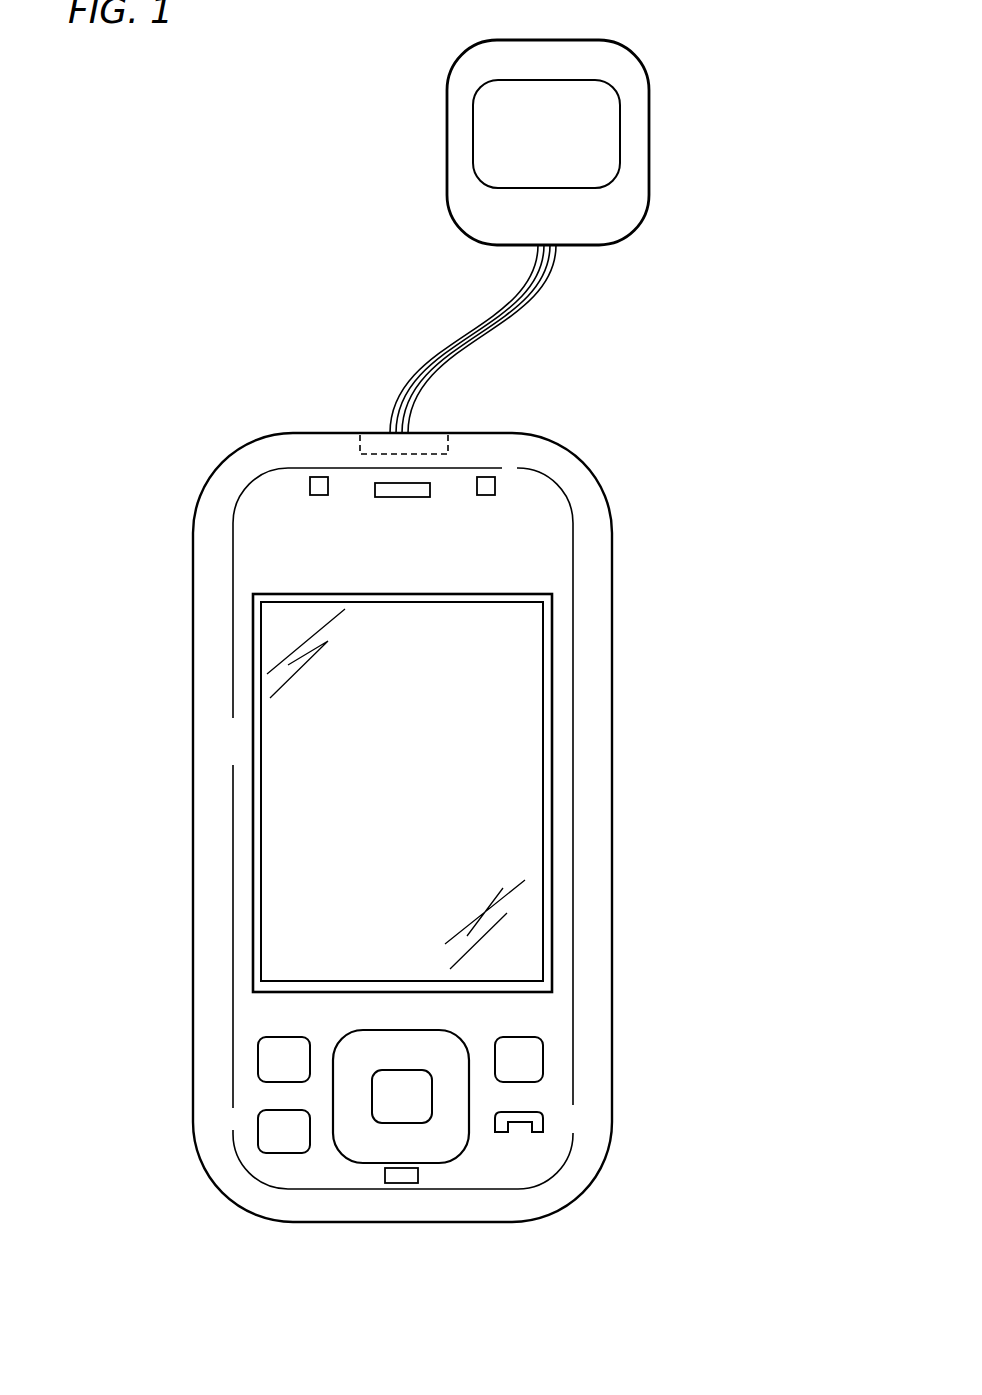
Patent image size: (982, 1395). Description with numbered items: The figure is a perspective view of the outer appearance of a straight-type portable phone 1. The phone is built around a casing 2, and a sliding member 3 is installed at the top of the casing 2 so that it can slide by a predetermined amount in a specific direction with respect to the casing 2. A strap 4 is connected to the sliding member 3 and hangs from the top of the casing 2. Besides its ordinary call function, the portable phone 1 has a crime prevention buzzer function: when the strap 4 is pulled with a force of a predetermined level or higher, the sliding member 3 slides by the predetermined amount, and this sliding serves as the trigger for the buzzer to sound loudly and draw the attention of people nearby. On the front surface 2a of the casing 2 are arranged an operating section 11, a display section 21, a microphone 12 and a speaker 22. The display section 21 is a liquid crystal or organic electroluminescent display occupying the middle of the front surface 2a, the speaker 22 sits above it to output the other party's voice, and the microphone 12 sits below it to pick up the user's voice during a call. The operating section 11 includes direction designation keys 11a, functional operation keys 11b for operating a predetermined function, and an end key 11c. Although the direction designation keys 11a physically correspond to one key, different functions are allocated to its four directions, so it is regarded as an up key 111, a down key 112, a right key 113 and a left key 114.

The portable phone 1 is at (182, 314).
The casing 2 is at (632, 563).
The front surface 2a is at (267, 492).
The sliding member 3 is at (373, 442).
The strap 4 is at (664, 182).
The operating section 11 is at (244, 1056).
The direction designation keys 11a is at (345, 1175).
The functional operation keys 11b is at (265, 1067).
The end key 11c is at (517, 1122).
The microphone 12 is at (412, 1183).
The display section 21 is at (512, 836).
The speaker 22 is at (434, 489).
The up key 111 is at (412, 1042).
The down key 112 is at (388, 1140).
The right key 113 is at (462, 1098).
The left key 114 is at (352, 1098).